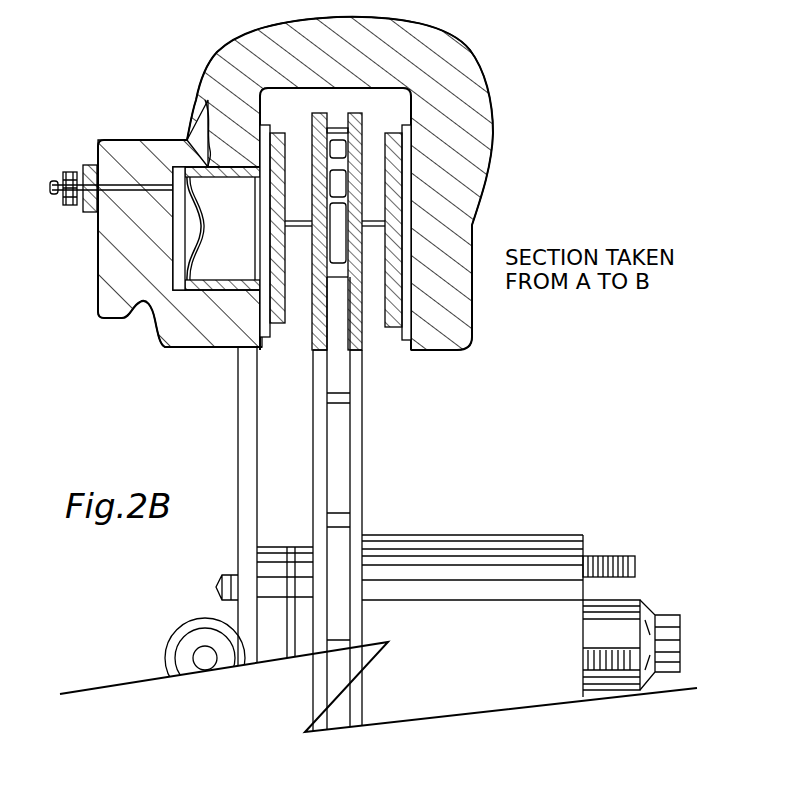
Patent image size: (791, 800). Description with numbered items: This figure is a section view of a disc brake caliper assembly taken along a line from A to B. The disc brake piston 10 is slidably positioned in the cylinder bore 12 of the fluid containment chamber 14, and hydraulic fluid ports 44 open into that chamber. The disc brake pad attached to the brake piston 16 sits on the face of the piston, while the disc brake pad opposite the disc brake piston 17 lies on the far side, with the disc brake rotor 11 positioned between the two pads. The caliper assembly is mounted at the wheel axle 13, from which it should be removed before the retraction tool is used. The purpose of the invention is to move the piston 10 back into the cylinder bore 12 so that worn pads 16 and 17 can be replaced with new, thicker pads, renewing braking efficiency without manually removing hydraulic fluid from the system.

The disc brake piston 10 is at (205, 100).
The disc brake rotor 11 is at (365, 118).
The cylinder bore 12 is at (165, 298).
The wheel axle 13 is at (665, 613).
The fluid containment chamber 14 is at (178, 262).
The disc brake pad attached to brake piston 16 is at (270, 333).
The disc brake pad opposite to disc brake piston 17 is at (398, 190).
The hydraulic fluid ports 44 is at (70, 110).